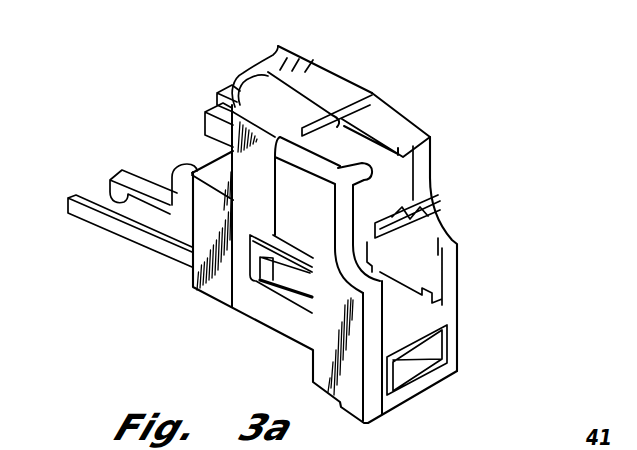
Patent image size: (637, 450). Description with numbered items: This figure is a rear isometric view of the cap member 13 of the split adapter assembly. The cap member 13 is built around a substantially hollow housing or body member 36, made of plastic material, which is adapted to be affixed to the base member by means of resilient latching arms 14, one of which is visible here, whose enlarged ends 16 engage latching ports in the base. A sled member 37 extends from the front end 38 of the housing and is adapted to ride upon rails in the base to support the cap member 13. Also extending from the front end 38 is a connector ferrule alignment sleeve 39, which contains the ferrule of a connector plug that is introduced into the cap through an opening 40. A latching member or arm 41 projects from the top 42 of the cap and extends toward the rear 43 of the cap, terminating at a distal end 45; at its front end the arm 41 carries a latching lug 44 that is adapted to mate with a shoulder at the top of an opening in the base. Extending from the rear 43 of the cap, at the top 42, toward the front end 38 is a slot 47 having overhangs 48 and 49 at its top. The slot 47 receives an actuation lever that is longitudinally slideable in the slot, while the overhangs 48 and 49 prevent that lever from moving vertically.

The cap member 13 is at (223, 287).
The resilient latching arms 14 is at (297, 278).
The enlarged ends 16 is at (267, 270).
The housing or body member 36 is at (433, 200).
The sled member 37 is at (125, 240).
The front end 38 is at (180, 232).
The connector ferrule alignment sleeve 39 is at (185, 165).
The opening 40 is at (433, 285).
The latching member or arm 41 is at (337, 82).
The top 42 is at (397, 128).
The rear 43 is at (457, 372).
The latching lug 44 is at (313, 57).
The distal end 45 is at (371, 96).
The slot 47 is at (385, 175).
The overhang 48 is at (335, 186).
The overhang 49 is at (427, 137).